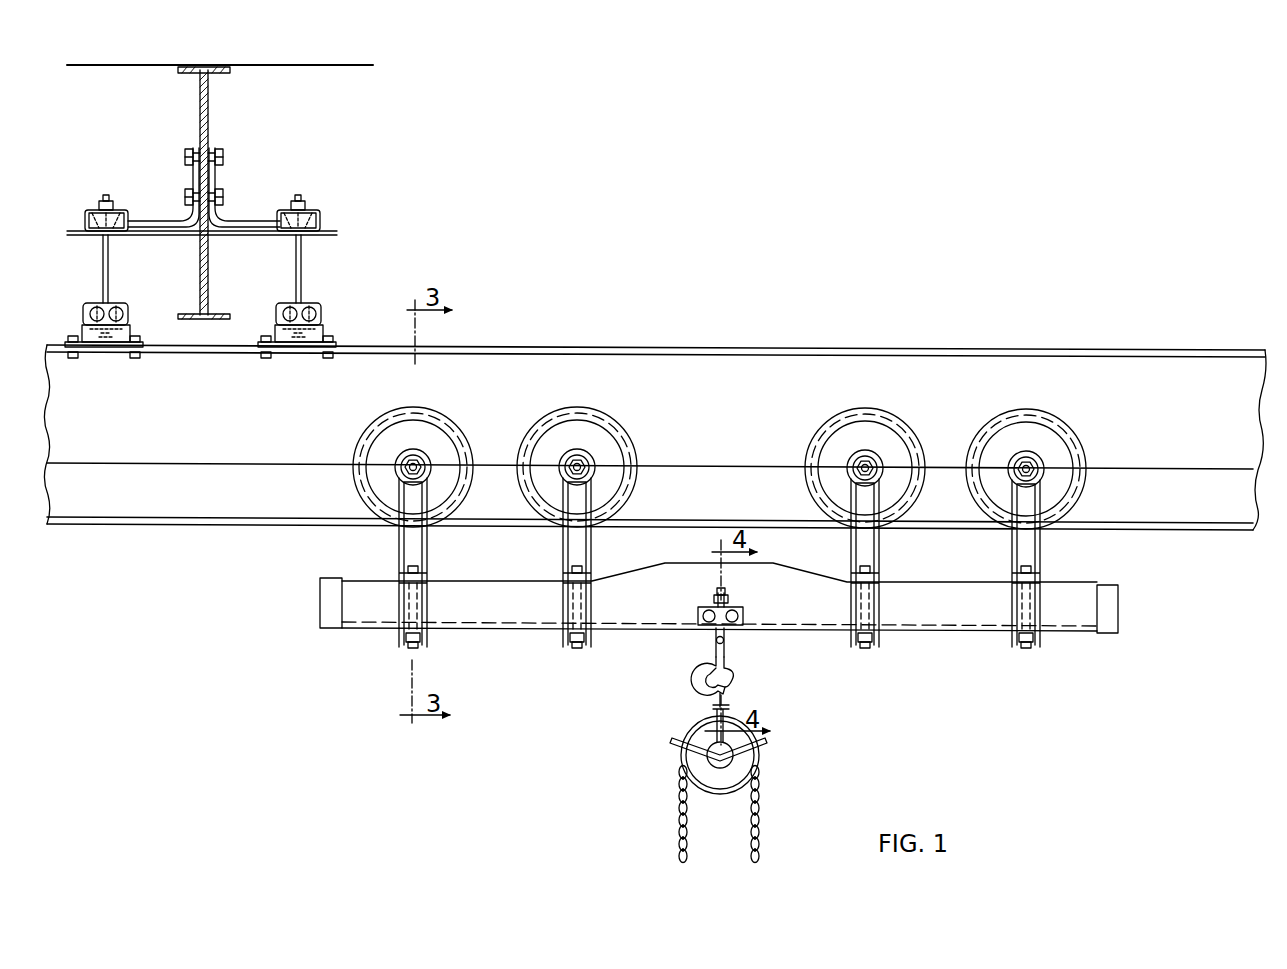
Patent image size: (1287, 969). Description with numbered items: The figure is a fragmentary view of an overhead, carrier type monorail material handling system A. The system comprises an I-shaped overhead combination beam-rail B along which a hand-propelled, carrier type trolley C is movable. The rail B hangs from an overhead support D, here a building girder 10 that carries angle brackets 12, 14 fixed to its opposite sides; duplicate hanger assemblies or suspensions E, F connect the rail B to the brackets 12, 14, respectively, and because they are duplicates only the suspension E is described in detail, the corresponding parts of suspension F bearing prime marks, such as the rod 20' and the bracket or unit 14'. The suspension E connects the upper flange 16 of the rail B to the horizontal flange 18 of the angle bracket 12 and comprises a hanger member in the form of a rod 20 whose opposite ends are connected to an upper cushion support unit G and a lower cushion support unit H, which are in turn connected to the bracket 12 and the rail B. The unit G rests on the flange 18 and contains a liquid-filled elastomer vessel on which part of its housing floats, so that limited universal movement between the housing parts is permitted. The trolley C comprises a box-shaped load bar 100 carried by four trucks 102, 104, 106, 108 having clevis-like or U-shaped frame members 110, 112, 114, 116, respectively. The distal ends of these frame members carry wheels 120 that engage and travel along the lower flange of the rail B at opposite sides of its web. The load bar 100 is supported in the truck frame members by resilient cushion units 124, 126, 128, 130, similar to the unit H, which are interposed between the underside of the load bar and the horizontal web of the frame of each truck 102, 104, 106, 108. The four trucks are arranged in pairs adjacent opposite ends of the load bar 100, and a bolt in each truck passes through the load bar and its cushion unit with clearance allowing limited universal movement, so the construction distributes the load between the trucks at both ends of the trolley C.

The building girder 10 is at (210, 118).
The angle bracket 12 is at (190, 178).
The angle bracket 14 is at (150, 253).
The angle bracket 14' is at (315, 330).
The upper flange of the rail 16 is at (775, 357).
The horizontal flange of angle bracket 18 is at (70, 231).
The rod 20 is at (132, 269).
The rod 20' is at (274, 269).
The load bar 100 is at (1084, 587).
The truck 102 is at (351, 445).
The truck 104 is at (639, 447).
The truck 106 is at (803, 447).
The truck 108 is at (1089, 452).
The U-shaped frame member 110 is at (399, 553).
The U-shaped frame member 112 is at (563, 553).
The U-shaped frame member 114 is at (851, 553).
The U-shaped frame member 116 is at (1012, 556).
The wheels 120 is at (420, 406).
The cushion unit 124 is at (405, 631).
The cushion unit 126 is at (566, 637).
The cushion unit 128 is at (851, 637).
The cushion unit 130 is at (1012, 638).
The overhead material handling system A is at (795, 272).
The combination beam-rail B is at (683, 345).
The trolley C is at (1122, 620).
The overhead support D is at (185, 97).
The hanger assembly or suspension E is at (98, 262).
The hanger assembly or suspension F is at (313, 277).
The upper cushion support unit G is at (93, 197).
The lower cushion support unit H is at (137, 329).